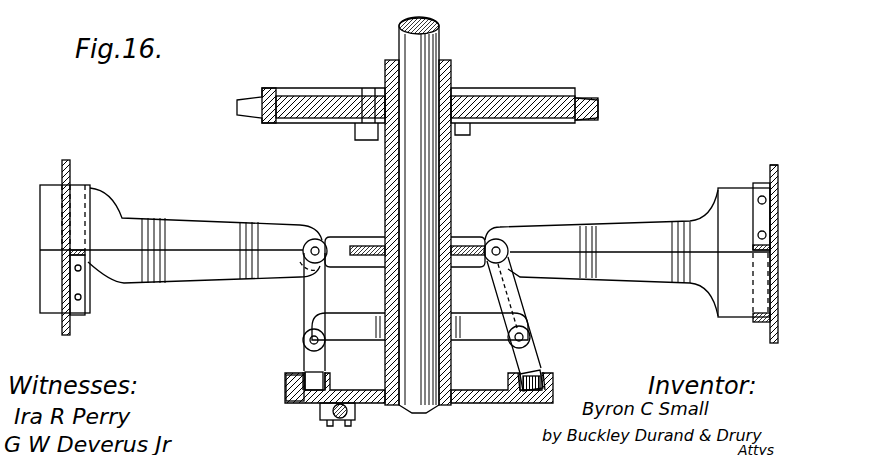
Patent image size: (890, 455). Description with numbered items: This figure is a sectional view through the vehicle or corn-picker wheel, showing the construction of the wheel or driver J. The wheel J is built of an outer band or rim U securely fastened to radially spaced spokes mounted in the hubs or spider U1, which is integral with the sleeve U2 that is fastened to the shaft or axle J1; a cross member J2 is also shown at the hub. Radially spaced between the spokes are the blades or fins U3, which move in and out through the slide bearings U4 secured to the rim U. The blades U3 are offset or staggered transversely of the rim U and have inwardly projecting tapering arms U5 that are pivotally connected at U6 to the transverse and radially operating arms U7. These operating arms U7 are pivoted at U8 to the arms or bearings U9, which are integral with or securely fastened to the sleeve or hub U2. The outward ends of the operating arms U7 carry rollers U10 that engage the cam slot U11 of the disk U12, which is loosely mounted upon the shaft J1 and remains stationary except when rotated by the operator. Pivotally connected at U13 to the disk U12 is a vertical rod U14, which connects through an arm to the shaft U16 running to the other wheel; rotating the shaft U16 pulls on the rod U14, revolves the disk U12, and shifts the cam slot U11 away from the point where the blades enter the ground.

The wheel or driver J is at (780, 162).
The shaft or axle J1 is at (441, 33).
The cross beam J2 is at (588, 100).
The outer band or rim U is at (62, 318).
The hubs or spider U1 is at (342, 249).
The sleeve U2 is at (443, 218).
The blades or fins U3 is at (50, 205).
The slide bearings U4 is at (93, 275).
The tapering arms U5 is at (232, 258).
The pivotal connection U6 is at (321, 246).
The operating arms U7 is at (304, 314).
The pivot U8 is at (304, 341).
The arms or bearings U9 is at (340, 322).
The rollers U10 is at (542, 373).
The cam slot U11 is at (330, 385).
The disk U12 is at (483, 404).
The pivotal connection U13 is at (330, 424).
The vertical rod U14 is at (346, 424).
The shaft U16 is at (305, 398).